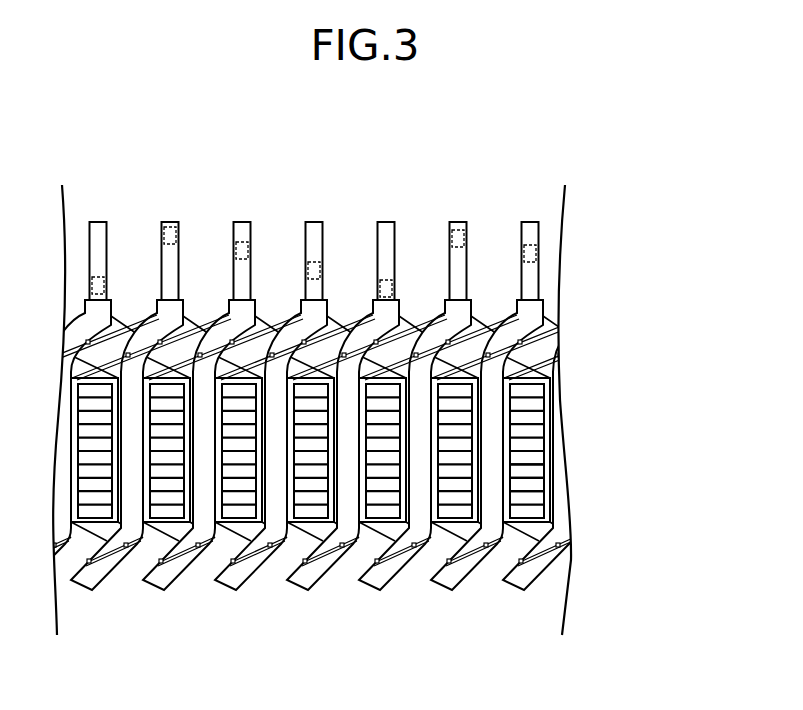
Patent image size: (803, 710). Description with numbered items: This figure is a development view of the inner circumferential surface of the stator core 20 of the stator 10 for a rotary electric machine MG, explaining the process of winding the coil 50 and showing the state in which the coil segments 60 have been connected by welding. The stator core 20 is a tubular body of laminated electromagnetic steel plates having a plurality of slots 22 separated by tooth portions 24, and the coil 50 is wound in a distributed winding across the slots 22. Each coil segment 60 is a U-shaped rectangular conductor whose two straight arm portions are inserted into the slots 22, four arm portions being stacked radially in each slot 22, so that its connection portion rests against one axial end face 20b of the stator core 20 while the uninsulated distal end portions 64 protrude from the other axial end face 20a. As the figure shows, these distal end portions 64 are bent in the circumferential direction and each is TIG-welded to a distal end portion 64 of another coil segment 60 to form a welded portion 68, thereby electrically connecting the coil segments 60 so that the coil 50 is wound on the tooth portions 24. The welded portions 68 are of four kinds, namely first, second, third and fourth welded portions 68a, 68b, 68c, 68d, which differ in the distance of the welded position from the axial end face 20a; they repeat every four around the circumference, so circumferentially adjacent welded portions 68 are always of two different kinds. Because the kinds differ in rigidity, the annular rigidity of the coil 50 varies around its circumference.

The rotary electric machine MG is at (348, 396).
The stator 10 is at (348, 422).
The stator core 20 is at (649, 383).
The axial end face 20a is at (560, 373).
The another axial end face 20b is at (540, 530).
The slot 22 is at (572, 460).
The tooth portion 24 is at (528, 475).
The coil 50 is at (446, 658).
The coil segment 60 is at (183, 590).
The distal end portion 64 is at (539, 273).
The welded portion 68 is at (447, 193).
The first welded portion 68a is at (179, 232).
The second welded portion 68b is at (252, 252).
The third welded portion 68c is at (323, 270).
The fourth welded portion 68d is at (106, 288).